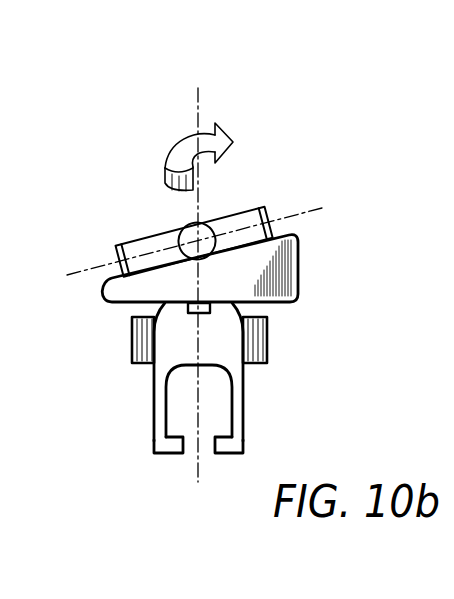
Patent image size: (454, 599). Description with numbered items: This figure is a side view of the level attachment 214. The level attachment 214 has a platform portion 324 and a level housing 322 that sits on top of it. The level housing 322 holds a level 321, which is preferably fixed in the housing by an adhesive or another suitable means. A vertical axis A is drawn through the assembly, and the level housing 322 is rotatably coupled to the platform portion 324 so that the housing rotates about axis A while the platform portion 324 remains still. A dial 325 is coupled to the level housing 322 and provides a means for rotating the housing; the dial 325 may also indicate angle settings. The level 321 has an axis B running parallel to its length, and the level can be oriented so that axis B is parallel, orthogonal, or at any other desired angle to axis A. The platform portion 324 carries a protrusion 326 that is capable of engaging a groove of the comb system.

The level attachment 214 is at (298, 172).
The level 321 is at (142, 236).
The level housing 322 is at (300, 265).
The platform portion 324 is at (245, 412).
The dial 325 is at (268, 340).
The protrusion 326 is at (173, 443).
The axis A is at (197, 113).
The axis B is at (90, 267).